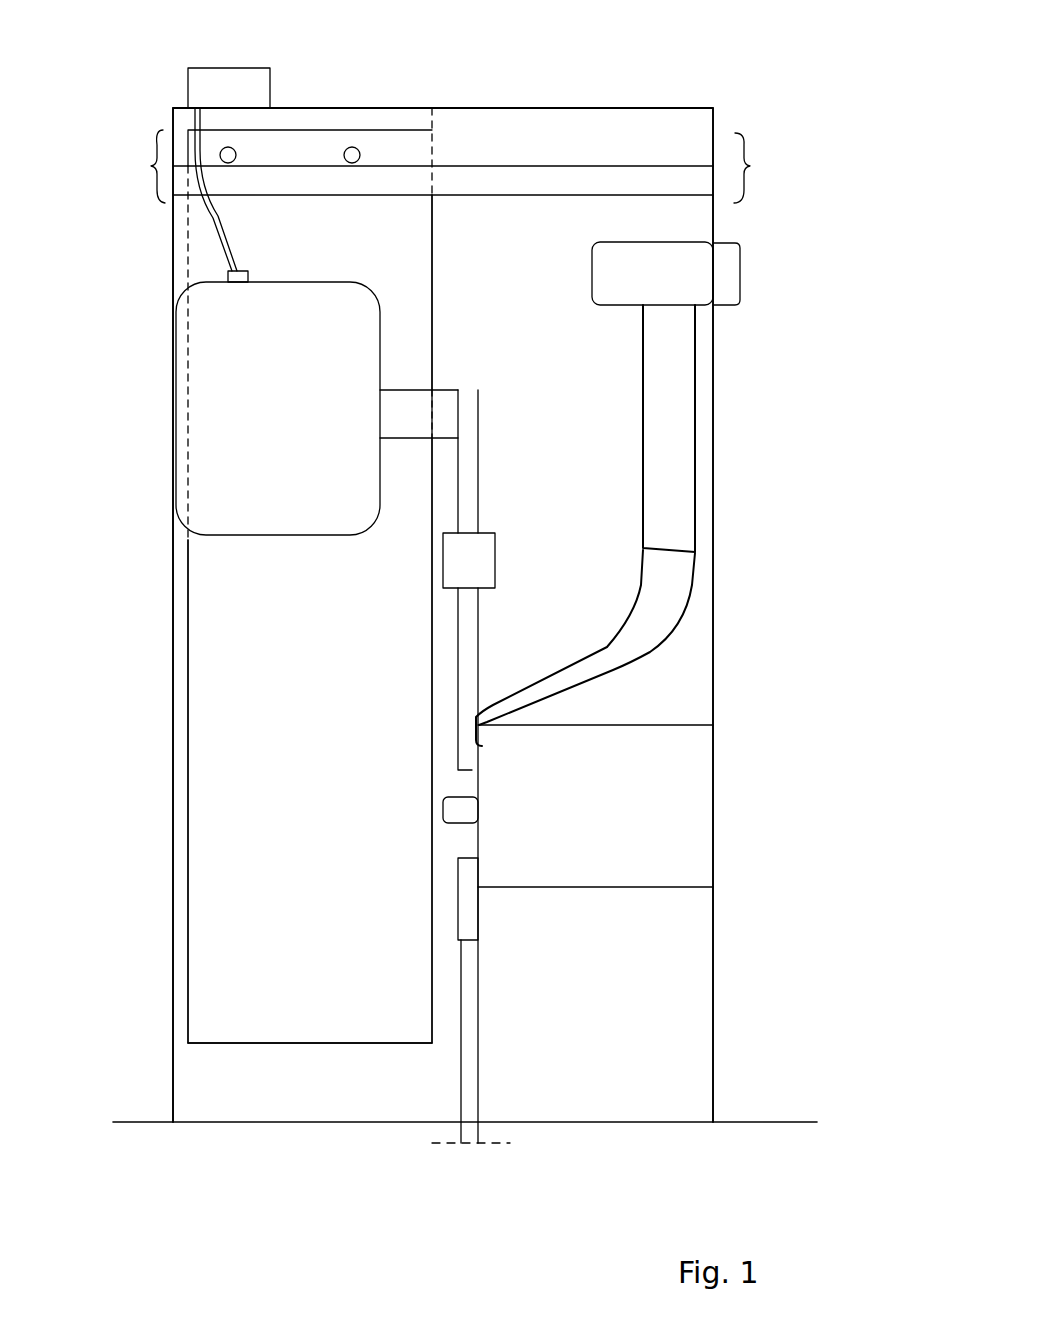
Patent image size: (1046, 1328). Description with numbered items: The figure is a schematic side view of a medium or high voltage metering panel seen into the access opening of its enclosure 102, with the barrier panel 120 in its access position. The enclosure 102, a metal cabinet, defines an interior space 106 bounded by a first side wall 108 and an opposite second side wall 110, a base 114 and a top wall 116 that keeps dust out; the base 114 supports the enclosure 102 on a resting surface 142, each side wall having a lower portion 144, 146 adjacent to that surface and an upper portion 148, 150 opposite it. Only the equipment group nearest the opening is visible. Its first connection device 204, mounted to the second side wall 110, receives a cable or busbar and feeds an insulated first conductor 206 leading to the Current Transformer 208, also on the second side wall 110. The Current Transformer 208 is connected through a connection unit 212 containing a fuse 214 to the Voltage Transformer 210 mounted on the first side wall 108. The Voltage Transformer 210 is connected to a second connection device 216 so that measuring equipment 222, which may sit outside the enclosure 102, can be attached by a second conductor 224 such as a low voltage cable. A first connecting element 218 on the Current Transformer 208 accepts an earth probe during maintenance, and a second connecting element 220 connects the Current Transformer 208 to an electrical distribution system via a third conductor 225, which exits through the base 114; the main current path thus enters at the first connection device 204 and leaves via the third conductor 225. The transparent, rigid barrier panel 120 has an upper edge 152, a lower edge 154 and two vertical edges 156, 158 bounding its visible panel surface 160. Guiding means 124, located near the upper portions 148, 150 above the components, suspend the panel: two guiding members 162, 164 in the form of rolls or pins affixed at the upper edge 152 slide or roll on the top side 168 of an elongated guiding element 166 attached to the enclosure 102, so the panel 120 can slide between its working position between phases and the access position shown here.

The enclosure 102 is at (815, 335).
The interior space 106 is at (683, 940).
The first side wall 108 is at (173, 265).
The second side wall 110 is at (715, 382).
The base 114 is at (355, 1122).
The top wall 116 is at (412, 107).
The barrier panel 120 is at (190, 718).
The guiding means 124 is at (153, 160).
The resting surface 142 is at (140, 1120).
The lower portion 144 is at (165, 1102).
The lower portion 146 is at (714, 1099).
The upper portion 148 is at (166, 216).
The upper portion 150 is at (766, 182).
The upper edge 152 is at (275, 128).
The lower edge 154 is at (233, 1045).
The vertical edge 156 is at (188, 848).
The vertical edge 158 is at (432, 292).
The panel surface 160 is at (305, 802).
The guiding member 162 is at (228, 147).
The guiding member 164 is at (352, 147).
The guiding element 166 is at (496, 178).
The top side 168 is at (550, 165).
The first connection device 204 is at (705, 270).
The first conductor 206 is at (672, 470).
The Current Transformer 208 is at (690, 772).
The Voltage Transformer 210 is at (212, 500).
The connection unit 212 is at (481, 470).
The fuse 214 is at (480, 555).
The second connection device 216 is at (255, 272).
The first connecting element 218 is at (462, 810).
The second connecting element 220 is at (468, 905).
The measuring equipment 222 is at (210, 83).
The second conductor 224 is at (225, 228).
The third conductor 225 is at (478, 1047).